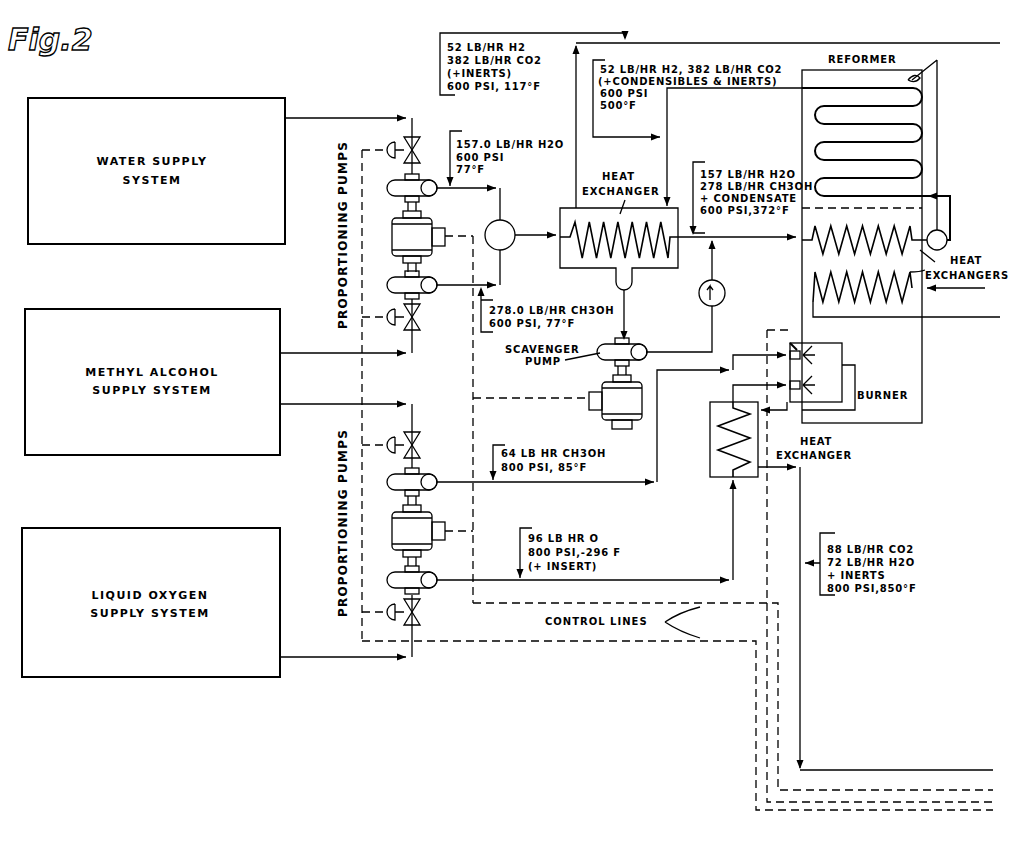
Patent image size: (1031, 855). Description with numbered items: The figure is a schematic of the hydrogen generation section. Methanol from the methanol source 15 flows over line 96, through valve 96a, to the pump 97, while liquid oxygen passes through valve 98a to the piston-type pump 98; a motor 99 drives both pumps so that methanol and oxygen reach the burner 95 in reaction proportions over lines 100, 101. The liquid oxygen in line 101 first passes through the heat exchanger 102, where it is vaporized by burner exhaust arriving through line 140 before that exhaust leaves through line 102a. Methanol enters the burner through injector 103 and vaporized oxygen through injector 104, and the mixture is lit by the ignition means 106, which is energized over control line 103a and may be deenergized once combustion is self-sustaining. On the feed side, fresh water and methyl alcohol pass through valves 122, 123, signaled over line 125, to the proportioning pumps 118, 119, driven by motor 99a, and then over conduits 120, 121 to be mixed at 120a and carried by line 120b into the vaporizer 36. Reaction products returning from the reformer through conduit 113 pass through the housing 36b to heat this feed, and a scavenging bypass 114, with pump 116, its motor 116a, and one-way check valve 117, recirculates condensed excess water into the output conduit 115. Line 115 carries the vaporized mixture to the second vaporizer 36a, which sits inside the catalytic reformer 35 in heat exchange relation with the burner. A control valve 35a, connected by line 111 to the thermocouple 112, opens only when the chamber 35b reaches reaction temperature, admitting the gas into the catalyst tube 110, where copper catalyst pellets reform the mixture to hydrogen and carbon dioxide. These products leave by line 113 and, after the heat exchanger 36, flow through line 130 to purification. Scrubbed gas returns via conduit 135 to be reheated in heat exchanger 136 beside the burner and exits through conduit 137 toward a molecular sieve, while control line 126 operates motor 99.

The methanol source 15 is at (127, 444).
The catalytic reformer 35 is at (883, 241).
The control valve 35a is at (948, 244).
The reformer chamber 35b is at (915, 155).
The vaporizer 36 is at (687, 251).
The second vaporizer 36a is at (815, 248).
The housing 36b is at (602, 262).
The burner 95 is at (843, 352).
The methanol line 96 is at (323, 395).
The valve 96a is at (418, 440).
The methanol pump 97 is at (408, 480).
The liquid oxygen pump 98 is at (410, 582).
The valve 98a is at (382, 625).
The motor 99 is at (394, 522).
The motor 99a is at (392, 232).
The methanol supply line 100 is at (603, 482).
The liquid oxygen line 101 is at (690, 576).
The heat exchanger 102 is at (700, 452).
The exhaust line 102a is at (780, 478).
The injector 103 is at (788, 353).
The control line 103a is at (768, 550).
The injector 104 is at (788, 372).
The ignition means 106 is at (796, 343).
The catalyst tube 110 is at (912, 170).
The line 111 is at (940, 105).
The thermocouple 112 is at (920, 80).
The conduit 113 is at (728, 92).
The bypass 114 is at (624, 312).
The output conduit 115 is at (712, 237).
The scavenging pump 116 is at (626, 348).
The pump motor 116a is at (612, 406).
The one-way check valve 117 is at (722, 303).
The proportioning pump 118 is at (397, 186).
The proportioning pump 119 is at (400, 284).
The fresh water conduit 120 is at (355, 100).
The mixing point 120a is at (512, 225).
The feed line 120b is at (528, 237).
The methyl alcohol conduit 121 is at (322, 342).
The valve 122 is at (393, 147).
The valve 123 is at (390, 323).
The control line 125 is at (528, 645).
The control line 126 is at (733, 605).
The product line 130 is at (988, 46).
The conduit 135 is at (980, 290).
The heat exchanger 136 is at (905, 300).
The conduit 137 is at (976, 320).
The exhaust line 140 is at (786, 418).